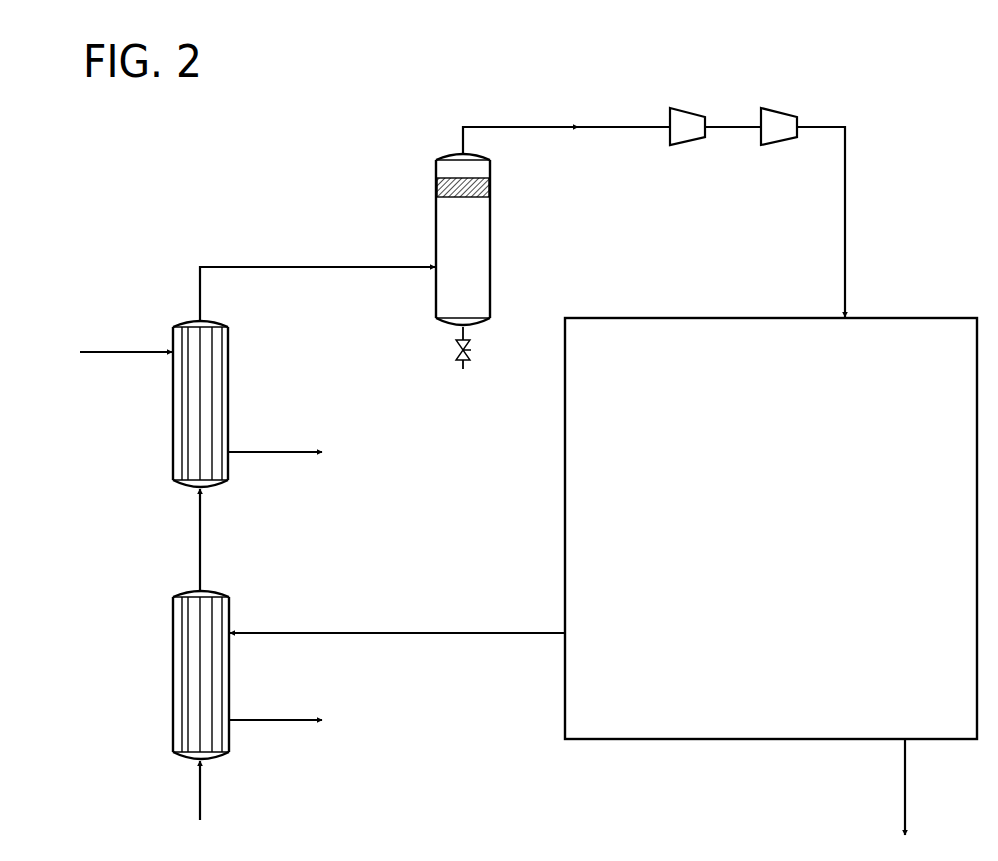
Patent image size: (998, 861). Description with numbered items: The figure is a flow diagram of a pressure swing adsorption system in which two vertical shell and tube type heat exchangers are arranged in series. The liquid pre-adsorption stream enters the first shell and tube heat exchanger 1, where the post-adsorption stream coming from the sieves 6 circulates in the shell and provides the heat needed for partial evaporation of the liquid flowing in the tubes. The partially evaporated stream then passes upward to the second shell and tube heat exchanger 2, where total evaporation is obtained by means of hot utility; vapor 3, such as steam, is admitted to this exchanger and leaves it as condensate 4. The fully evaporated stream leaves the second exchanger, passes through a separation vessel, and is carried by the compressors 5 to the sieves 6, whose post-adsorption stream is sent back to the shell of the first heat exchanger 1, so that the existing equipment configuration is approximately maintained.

The shell and tube heat exchanger 1 is at (184, 675).
The shell and tube heat exchanger 2 is at (216, 404).
The vapor 3 is at (109, 357).
The condensate 4 is at (290, 455).
The compressors 5 is at (733, 109).
The sieves 6 is at (771, 528).